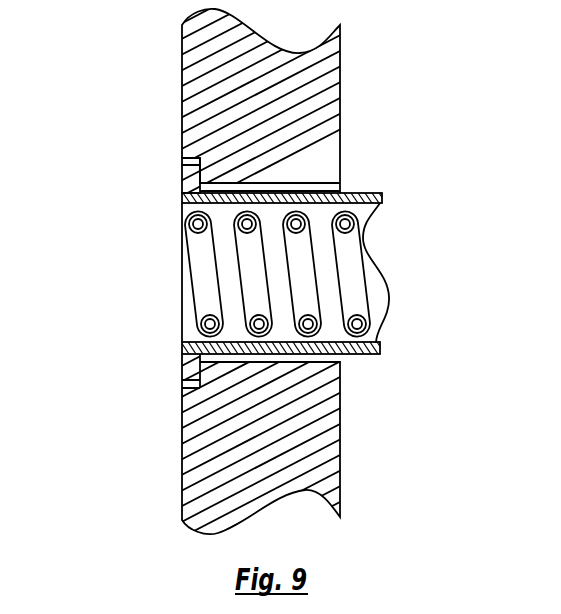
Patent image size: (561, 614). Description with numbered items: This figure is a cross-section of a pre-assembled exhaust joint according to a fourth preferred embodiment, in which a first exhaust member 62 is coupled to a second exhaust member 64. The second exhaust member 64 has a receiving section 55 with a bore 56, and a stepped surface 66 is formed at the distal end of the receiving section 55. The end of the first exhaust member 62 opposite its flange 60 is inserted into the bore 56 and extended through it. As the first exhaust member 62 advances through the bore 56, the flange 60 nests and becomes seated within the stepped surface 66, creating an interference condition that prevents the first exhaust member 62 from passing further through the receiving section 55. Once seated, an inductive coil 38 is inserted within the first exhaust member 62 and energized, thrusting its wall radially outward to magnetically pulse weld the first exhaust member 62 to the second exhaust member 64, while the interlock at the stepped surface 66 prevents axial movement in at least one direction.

The inductive coil 38 is at (342, 266).
The receiving section 55 is at (321, 182).
The bore 56 is at (355, 358).
The flange 60 is at (182, 178).
The first exhaust member 62 is at (380, 194).
The second exhaust member 64 is at (213, 441).
The stepped surface 66 is at (190, 158).